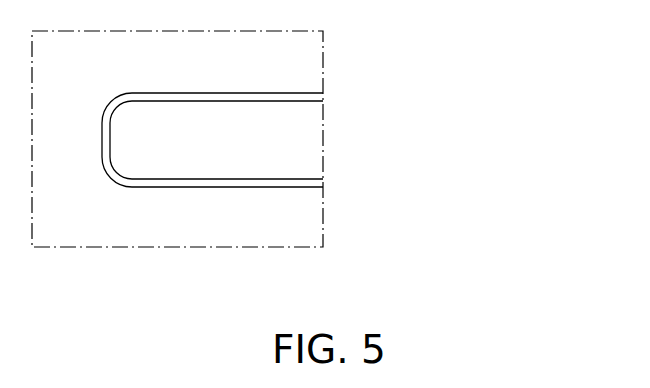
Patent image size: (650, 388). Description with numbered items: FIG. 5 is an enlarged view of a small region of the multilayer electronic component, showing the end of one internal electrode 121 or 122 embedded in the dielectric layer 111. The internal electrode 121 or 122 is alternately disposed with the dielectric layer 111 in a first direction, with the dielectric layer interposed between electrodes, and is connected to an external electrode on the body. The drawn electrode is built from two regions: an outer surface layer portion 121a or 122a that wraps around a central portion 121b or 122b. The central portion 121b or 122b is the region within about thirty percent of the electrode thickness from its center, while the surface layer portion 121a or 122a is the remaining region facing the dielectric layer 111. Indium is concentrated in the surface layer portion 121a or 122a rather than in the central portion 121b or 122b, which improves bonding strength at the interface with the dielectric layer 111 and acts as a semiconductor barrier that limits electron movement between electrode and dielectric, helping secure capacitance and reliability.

The dielectric layer 111 is at (300, 215).
The internal electrode 121 is at (354, 124).
The internal electrode 122 is at (354, 124).
The surface layer portion 121a is at (290, 124).
The surface layer portion 122a is at (277, 95).
The central portion 121b is at (295, 140).
The central portion 122b is at (300, 145).